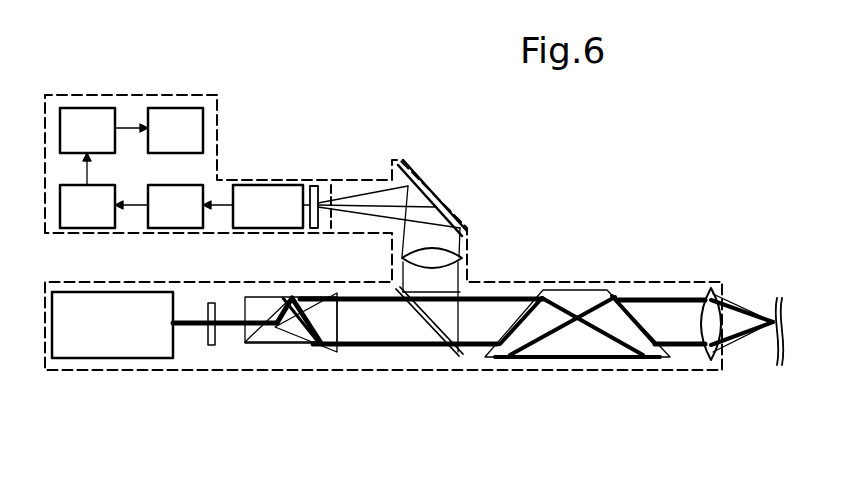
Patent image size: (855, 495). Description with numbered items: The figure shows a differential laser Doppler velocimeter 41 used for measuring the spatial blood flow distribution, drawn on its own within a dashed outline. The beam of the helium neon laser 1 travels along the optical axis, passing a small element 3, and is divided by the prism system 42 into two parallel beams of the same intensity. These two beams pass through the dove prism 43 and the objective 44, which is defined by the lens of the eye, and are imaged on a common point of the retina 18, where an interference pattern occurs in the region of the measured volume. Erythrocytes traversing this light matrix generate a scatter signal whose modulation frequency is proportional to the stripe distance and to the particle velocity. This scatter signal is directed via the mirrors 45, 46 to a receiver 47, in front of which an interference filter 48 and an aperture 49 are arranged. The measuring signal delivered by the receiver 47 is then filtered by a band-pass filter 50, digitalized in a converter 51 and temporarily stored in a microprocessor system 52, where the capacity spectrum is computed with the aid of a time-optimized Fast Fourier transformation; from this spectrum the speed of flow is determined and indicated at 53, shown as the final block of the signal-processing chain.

The helium neon laser 1 is at (123, 340).
The modulator 3 is at (210, 345).
The prism system 42 is at (257, 333).
The mirror 45 is at (420, 330).
The dove prism 43 is at (575, 305).
The objective 44 is at (708, 295).
The differential laser Doppler velocimeter 41 is at (633, 368).
The retina 18 is at (775, 350).
The mirror 46 is at (430, 205).
The receiver 47 is at (268, 200).
The interference filter 48 is at (314, 228).
The aperture 49 is at (331, 195).
The band-pass filter 50 is at (170, 218).
The converter 51 is at (80, 218).
The microprocessor system 52 is at (80, 125).
The indicator 53 is at (178, 125).